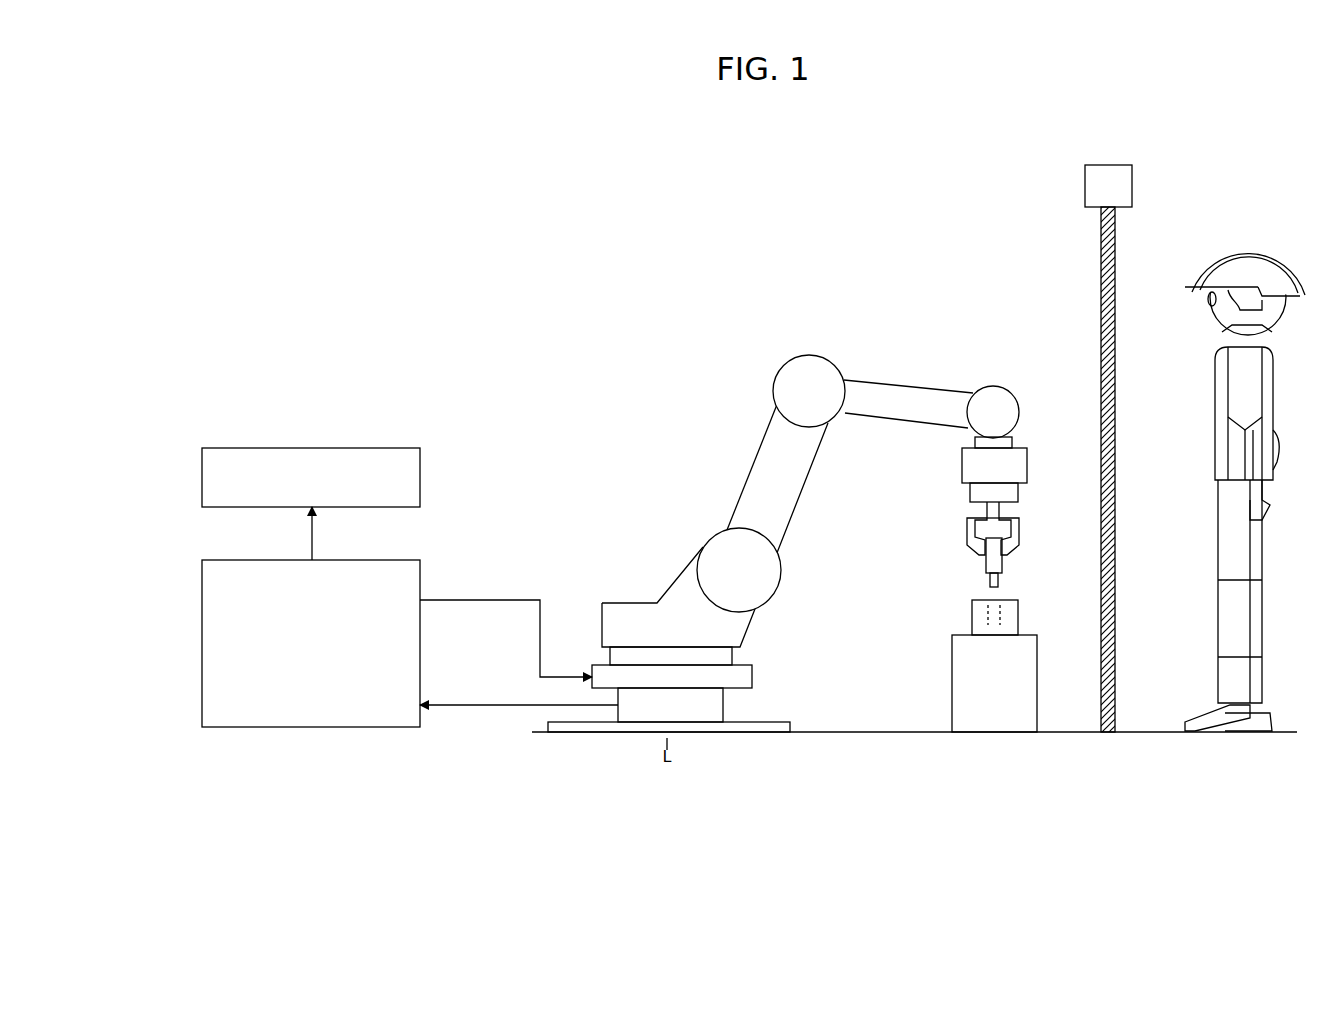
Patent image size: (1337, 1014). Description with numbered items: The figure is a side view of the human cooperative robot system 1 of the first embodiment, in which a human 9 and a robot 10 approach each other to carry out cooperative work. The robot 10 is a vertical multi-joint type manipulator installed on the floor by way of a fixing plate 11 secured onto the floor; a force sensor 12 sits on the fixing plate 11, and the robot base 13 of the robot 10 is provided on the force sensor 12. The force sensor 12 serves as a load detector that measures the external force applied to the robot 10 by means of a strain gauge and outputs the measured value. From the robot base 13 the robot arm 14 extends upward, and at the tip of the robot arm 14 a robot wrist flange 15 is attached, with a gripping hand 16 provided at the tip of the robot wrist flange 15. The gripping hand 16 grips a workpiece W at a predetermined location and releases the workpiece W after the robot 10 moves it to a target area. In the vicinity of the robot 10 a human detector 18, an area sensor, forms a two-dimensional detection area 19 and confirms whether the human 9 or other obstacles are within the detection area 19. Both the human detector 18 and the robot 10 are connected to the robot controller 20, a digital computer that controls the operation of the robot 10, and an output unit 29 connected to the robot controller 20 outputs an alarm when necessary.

The human cooperative robot system 1 is at (935, 310).
The human 9 is at (1260, 250).
The robot 10 is at (765, 357).
The fixing plate 11 is at (790, 724).
The force sensor 12 is at (723, 705).
The robot base 13 is at (752, 677).
The robot arm 14 is at (745, 476).
The robot wrist flange 15 is at (1012, 440).
The gripping hand 16 is at (967, 530).
The workpiece W is at (986, 560).
The human detector 18 is at (1132, 181).
The detection area 19 is at (1115, 243).
The robot controller 20 is at (398, 560).
The output unit 29 is at (398, 448).